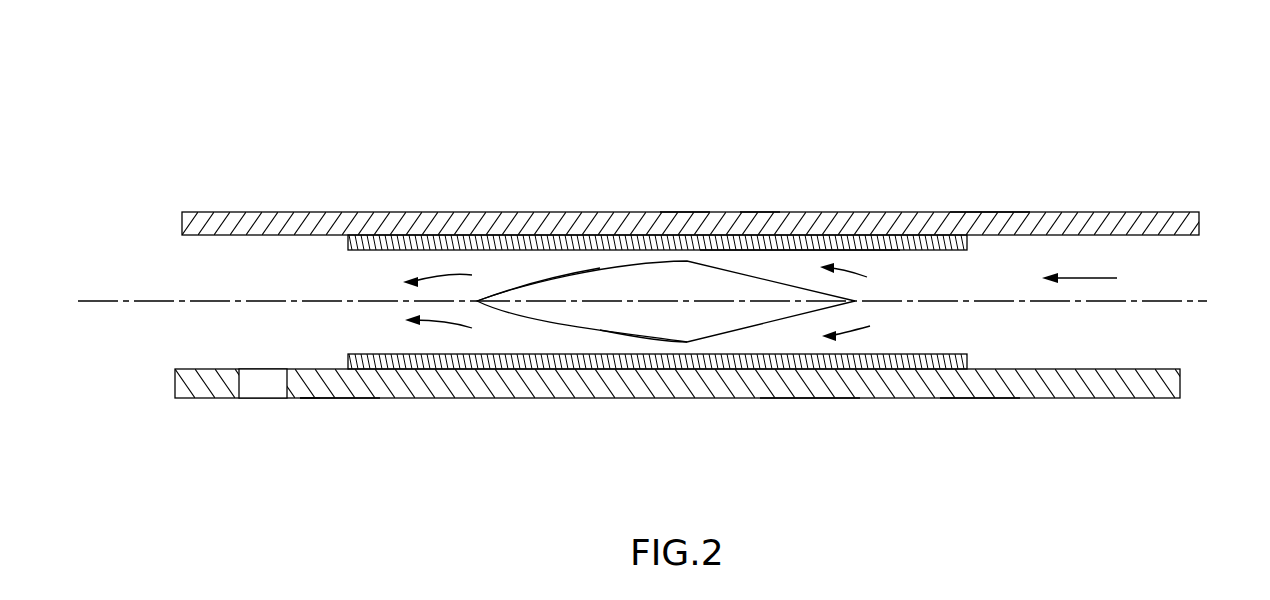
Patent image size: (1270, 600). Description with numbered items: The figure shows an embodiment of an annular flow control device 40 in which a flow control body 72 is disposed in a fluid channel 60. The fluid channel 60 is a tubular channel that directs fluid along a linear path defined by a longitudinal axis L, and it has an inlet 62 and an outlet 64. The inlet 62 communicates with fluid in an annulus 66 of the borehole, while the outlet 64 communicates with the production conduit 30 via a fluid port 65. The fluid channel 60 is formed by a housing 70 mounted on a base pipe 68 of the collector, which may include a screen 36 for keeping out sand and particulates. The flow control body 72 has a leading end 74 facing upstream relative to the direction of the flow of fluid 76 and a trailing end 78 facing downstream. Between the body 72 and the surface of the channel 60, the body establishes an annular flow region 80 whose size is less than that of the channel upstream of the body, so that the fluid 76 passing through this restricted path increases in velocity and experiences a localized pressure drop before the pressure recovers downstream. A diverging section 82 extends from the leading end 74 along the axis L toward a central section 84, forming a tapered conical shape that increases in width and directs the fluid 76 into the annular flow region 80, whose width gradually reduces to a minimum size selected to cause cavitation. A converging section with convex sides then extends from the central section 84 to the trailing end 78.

The production conduit 30 is at (307, 468).
The screen 36 is at (1075, 223).
The flow control device 40 is at (975, 76).
The fluid channel 60 is at (1130, 353).
The inlet 62 is at (978, 332).
The outlet 64 is at (335, 332).
The fluid port 65 is at (270, 387).
The annulus 66 is at (684, 160).
The base pipe 68 is at (803, 387).
The housing 70 is at (384, 244).
The flow control body 72 is at (757, 192).
The leading end 74 is at (857, 299).
The fluid 76 is at (1117, 278).
The trailing end 78 is at (478, 306).
The annular flow region 80 is at (780, 259).
The diverging section 82 is at (733, 310).
The central section 84 is at (680, 323).
The longitudinal axis L is at (1200, 302).